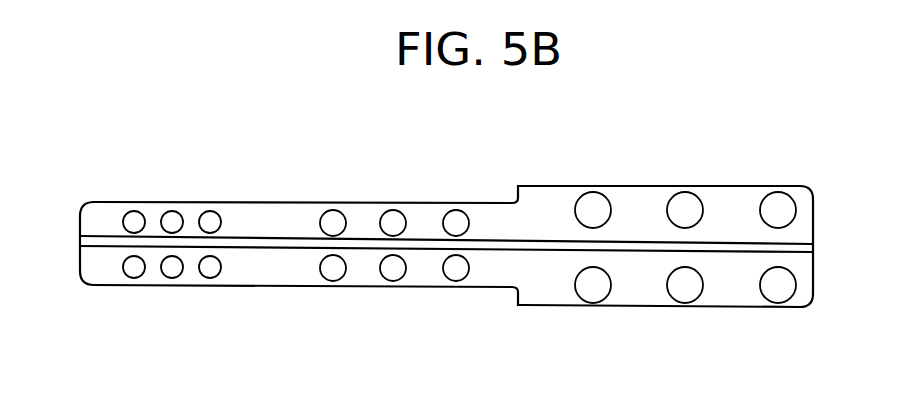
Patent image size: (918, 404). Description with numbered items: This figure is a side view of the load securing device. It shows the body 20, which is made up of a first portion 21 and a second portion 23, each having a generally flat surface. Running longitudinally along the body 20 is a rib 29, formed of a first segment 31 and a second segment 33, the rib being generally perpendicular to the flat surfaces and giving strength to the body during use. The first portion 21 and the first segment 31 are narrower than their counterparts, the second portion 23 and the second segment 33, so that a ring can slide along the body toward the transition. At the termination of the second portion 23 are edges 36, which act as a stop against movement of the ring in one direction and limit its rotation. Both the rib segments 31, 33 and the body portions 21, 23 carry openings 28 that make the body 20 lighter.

The body 20 is at (430, 231).
The first portion 21 is at (309, 184).
The second portion 23 is at (646, 159).
The openings 28 is at (777, 288).
The rib 29 is at (72, 249).
The first segment 31 is at (260, 245).
The second segment 33 is at (708, 246).
The edges 36 is at (516, 199).